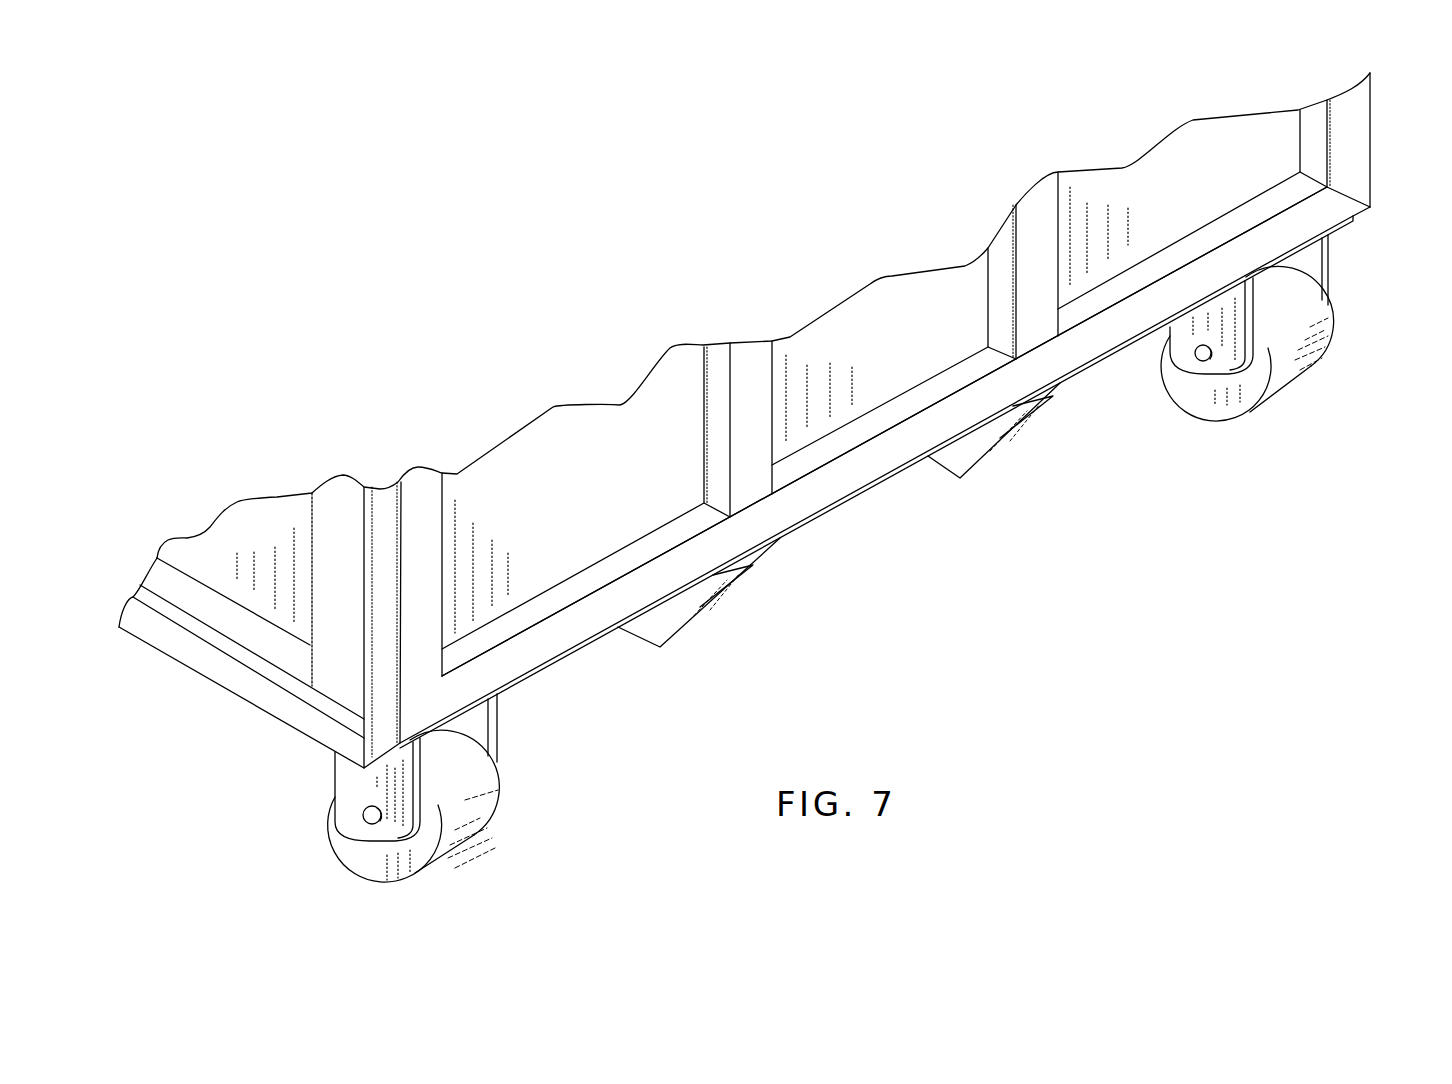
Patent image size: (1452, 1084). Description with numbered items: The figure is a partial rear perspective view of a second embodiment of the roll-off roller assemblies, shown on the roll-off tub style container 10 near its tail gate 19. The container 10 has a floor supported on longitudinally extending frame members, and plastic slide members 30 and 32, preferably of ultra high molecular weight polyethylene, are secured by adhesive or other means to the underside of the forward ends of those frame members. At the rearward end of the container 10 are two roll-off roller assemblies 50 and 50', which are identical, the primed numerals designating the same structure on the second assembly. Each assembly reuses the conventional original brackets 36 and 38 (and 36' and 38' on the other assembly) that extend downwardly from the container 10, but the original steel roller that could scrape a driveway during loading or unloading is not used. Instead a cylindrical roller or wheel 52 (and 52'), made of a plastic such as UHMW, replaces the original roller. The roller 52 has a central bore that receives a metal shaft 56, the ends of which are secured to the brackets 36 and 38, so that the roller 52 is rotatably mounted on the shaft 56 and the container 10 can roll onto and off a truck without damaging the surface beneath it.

The roll-off tub style container 10 is at (785, 502).
The tail gate 19 is at (868, 318).
The plastic slide member 30 is at (700, 605).
The plastic slide member 32 is at (992, 452).
The bracket 36 is at (324, 789).
The bracket 36' is at (1175, 377).
The bracket 38 is at (561, 728).
The bracket 38' is at (1384, 304).
The roll-off roller assembly 50 is at (439, 812).
The roll-off roller assembly 50' is at (1274, 405).
The cylindrical roller or wheel 52 is at (489, 806).
The cylindrical roller or wheel 52' is at (1268, 395).
The metal shaft 56 is at (415, 868).